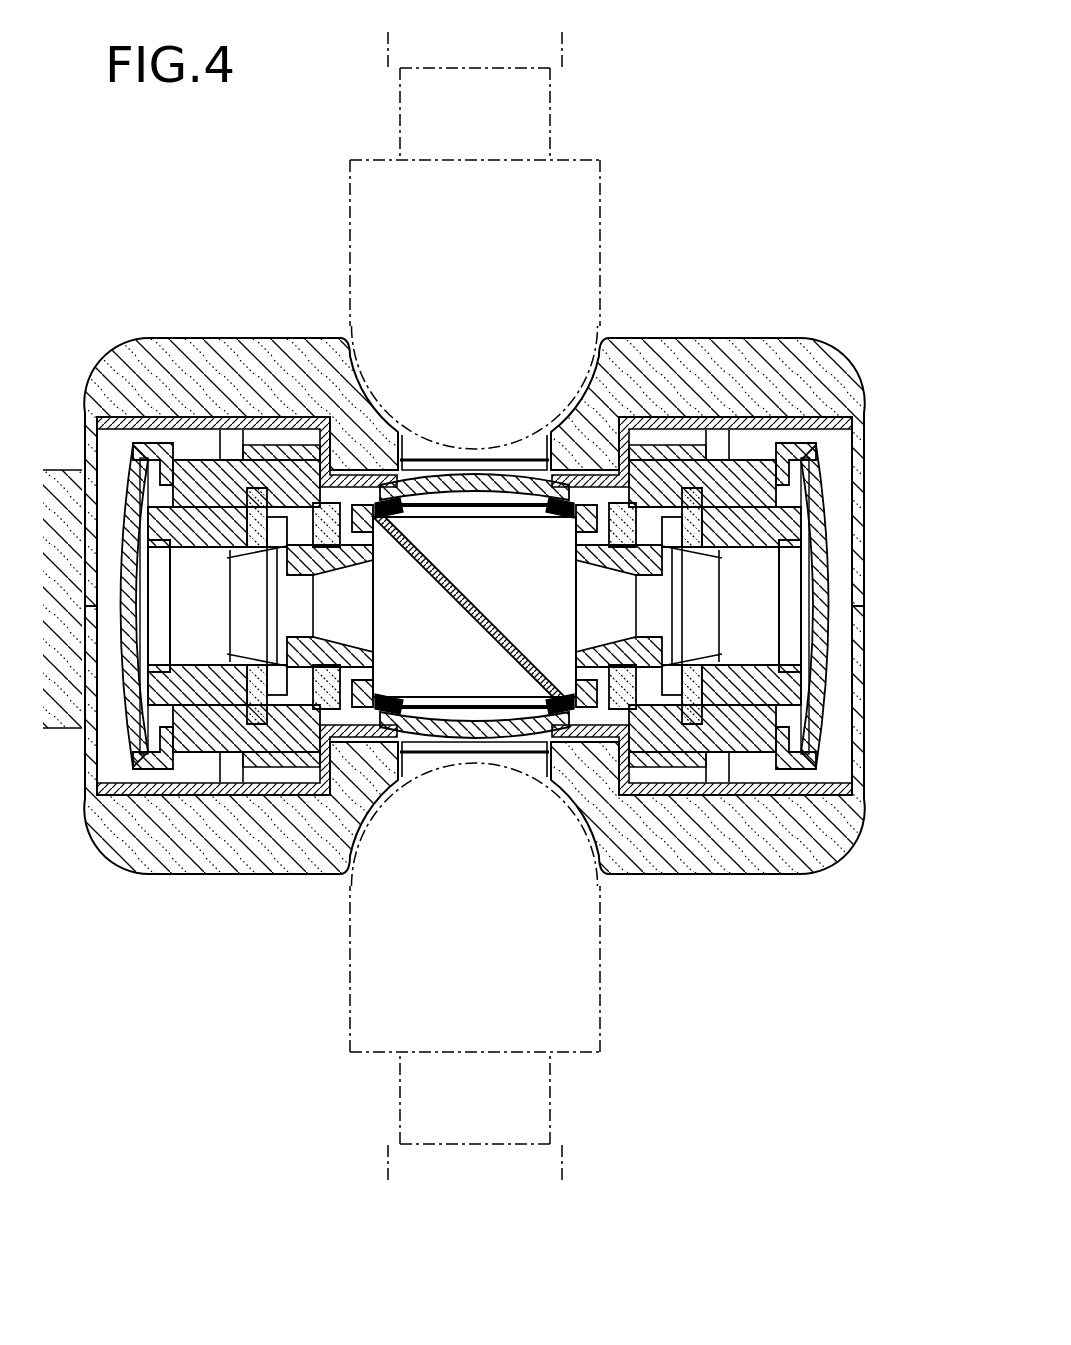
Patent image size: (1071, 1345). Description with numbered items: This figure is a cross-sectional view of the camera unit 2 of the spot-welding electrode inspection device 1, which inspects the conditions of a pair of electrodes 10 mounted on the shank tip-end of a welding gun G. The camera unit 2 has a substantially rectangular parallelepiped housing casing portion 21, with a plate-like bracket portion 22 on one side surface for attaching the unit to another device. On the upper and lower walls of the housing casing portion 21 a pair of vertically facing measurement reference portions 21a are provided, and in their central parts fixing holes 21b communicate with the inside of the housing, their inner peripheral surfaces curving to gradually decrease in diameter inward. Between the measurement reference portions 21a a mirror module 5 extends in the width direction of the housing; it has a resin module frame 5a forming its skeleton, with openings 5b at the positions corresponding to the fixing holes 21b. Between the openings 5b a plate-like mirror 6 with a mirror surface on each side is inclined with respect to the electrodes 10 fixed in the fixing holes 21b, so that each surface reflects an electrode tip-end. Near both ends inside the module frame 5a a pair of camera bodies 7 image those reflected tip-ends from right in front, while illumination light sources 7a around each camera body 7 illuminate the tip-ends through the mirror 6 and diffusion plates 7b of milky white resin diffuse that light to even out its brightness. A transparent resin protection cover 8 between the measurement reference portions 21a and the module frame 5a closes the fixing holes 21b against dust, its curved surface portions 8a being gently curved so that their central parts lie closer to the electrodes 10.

The spot-welding electrode inspection device 1 is at (762, 245).
The camera unit 2 is at (809, 311).
The mirror module 5 is at (203, 445).
The module frame 5a is at (235, 490).
The openings 5b is at (402, 500).
The mirror 6 is at (446, 601).
The camera bodies 7 is at (755, 531).
The illumination light sources 7a is at (283, 510).
The diffusion plates 7b is at (650, 495).
The protection cover 8 is at (497, 469).
The curved surface portions 8a is at (459, 469).
The electrodes 10 is at (600, 163).
The housing casing portion 21 is at (874, 404).
The measurement reference portions 21a is at (640, 517).
The fixing holes 21b is at (530, 478).
The bracket portion 22 is at (57, 460).
The welding gun G is at (562, 50).